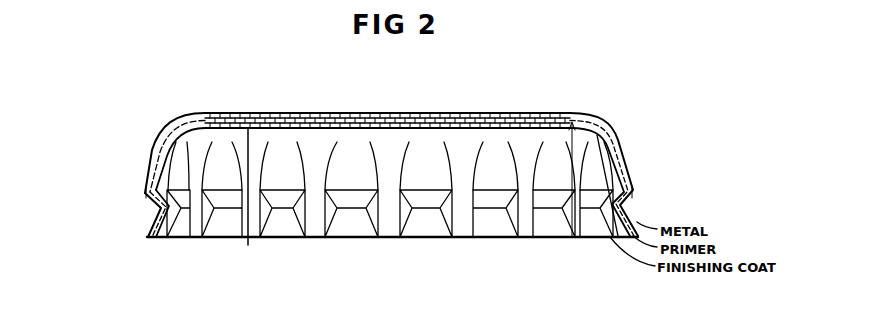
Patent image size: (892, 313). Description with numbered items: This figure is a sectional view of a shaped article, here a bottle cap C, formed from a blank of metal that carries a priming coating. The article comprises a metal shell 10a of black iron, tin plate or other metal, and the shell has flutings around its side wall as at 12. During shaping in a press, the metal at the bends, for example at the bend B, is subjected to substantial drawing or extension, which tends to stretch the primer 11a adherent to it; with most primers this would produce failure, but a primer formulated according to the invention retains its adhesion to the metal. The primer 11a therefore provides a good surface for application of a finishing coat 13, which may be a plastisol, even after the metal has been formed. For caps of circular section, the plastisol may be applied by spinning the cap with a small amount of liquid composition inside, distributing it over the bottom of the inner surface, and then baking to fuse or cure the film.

The bend B is at (174, 118).
The bottle cap C is at (637, 167).
The metal shell 10a is at (147, 188).
The primer 11a is at (147, 238).
The flutings 12 is at (410, 225).
The finishing coat 13 is at (248, 245).